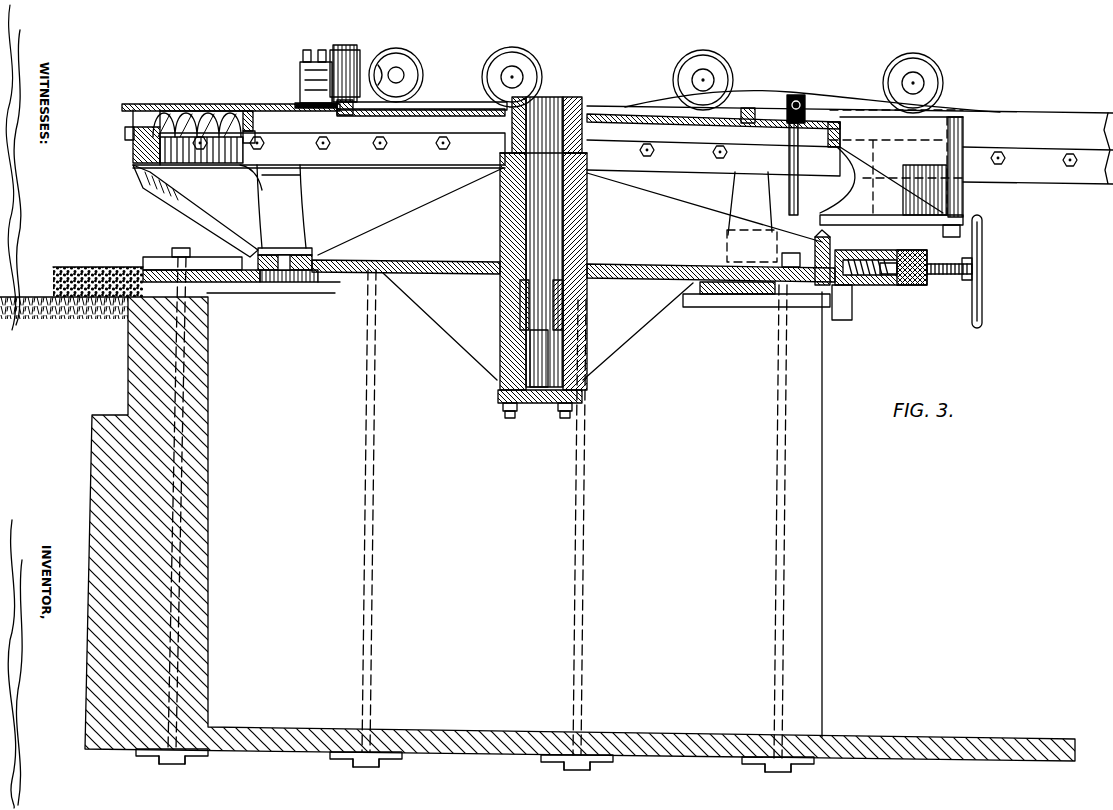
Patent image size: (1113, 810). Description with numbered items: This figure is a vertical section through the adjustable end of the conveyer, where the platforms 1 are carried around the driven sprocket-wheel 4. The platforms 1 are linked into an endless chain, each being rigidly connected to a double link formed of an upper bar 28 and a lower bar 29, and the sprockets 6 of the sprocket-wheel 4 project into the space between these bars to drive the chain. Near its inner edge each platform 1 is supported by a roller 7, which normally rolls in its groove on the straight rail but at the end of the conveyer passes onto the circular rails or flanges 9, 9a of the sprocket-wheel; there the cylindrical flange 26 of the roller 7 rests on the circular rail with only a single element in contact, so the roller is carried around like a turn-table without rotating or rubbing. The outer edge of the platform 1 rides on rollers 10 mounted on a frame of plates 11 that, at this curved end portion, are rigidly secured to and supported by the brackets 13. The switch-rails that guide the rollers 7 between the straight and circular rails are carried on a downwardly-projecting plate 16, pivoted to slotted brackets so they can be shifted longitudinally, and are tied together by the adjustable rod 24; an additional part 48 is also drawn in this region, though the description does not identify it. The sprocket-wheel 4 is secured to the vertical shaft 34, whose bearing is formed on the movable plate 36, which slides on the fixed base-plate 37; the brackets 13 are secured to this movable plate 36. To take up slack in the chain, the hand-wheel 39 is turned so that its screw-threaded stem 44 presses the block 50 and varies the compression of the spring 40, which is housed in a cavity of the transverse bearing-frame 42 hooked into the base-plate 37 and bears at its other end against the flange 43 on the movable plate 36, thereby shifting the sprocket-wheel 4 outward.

The horizontal platform 1 is at (223, 110).
The sprocket-wheel 4 is at (428, 118).
The sprockets 6 is at (232, 120).
The roller 7 is at (482, 73).
The circular rail 9 is at (433, 104).
The circular rail 9a is at (767, 115).
The roller 10 is at (148, 116).
The plate 11 is at (146, 150).
The bracket 13 is at (205, 210).
The downwardly-projecting plate 16 is at (891, 173).
The adjustable rod 24 is at (797, 95).
The flange 26 is at (357, 52).
The upper bar 28 is at (247, 110).
The lower bar 29 is at (250, 136).
The shaft 34 is at (555, 220).
The movable plate 36 is at (468, 252).
The fixed base-plate 37 is at (237, 283).
The hand-wheel 39 is at (983, 245).
The spring 40 is at (870, 285).
The transverse bearing-frame 42 is at (870, 250).
The flange 43 is at (800, 243).
The screw-threaded stem 44 is at (948, 277).
The plate 48 is at (801, 195).
The block 50 is at (898, 287).